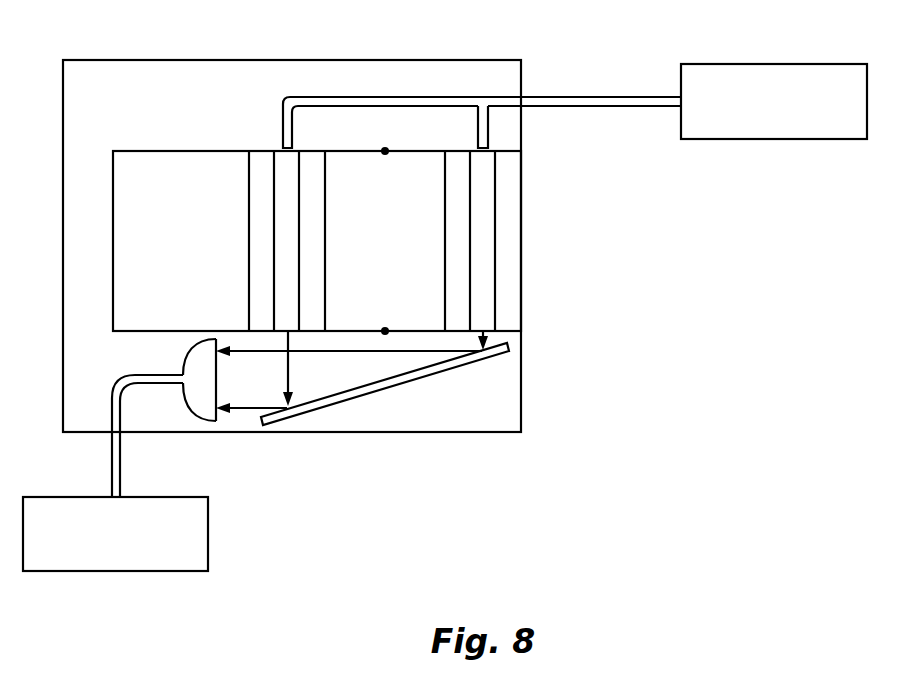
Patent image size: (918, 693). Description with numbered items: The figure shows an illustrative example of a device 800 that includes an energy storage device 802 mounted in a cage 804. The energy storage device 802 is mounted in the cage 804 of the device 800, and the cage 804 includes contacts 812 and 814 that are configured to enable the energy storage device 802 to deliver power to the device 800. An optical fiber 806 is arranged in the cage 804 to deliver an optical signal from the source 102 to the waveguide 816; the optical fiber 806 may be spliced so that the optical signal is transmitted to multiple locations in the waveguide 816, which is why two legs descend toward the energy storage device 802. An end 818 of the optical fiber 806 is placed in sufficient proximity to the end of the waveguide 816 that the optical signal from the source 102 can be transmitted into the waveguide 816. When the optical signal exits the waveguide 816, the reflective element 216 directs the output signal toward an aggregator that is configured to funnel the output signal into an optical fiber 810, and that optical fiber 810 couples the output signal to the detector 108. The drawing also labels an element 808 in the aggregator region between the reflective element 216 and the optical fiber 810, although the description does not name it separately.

The device 800 is at (662, 250).
The energy storage device 802 is at (367, 254).
The cage 804 is at (192, 67).
The optical fiber 806 is at (603, 97).
The collection lens 808 is at (192, 358).
The optical fiber 810 is at (118, 380).
The contact 812 is at (385, 158).
The contact 814 is at (385, 326).
The waveguide 816 is at (249, 242).
The end of the optical fiber 818 is at (283, 128).
The reflective element 216 is at (482, 363).
The source 102 is at (773, 139).
The detector 108 is at (200, 533).